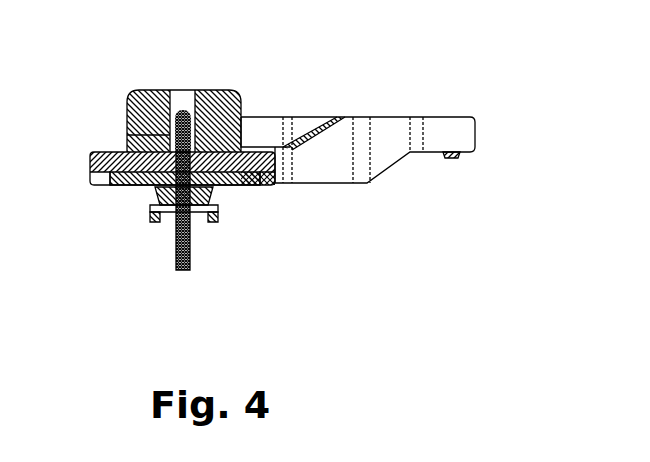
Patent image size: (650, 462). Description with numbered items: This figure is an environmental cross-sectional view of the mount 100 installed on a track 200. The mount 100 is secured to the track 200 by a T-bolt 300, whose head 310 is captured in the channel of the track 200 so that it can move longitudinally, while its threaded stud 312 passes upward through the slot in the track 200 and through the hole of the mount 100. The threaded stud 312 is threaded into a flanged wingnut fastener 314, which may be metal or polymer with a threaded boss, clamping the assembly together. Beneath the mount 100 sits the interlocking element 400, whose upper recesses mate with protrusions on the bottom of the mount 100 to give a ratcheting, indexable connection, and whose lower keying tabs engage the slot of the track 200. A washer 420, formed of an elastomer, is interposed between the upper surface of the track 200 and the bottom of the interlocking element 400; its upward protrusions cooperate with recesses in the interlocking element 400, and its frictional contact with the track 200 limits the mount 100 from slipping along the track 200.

The mount 100 is at (455, 68).
The track 200 is at (227, 204).
The T-bolt 300 is at (209, 222).
The head 310 is at (150, 222).
The threaded stud 312 is at (168, 139).
The flanged wingnut fastener 314 is at (156, 90).
The interlocking element 400 is at (112, 192).
The washer 420 is at (140, 198).